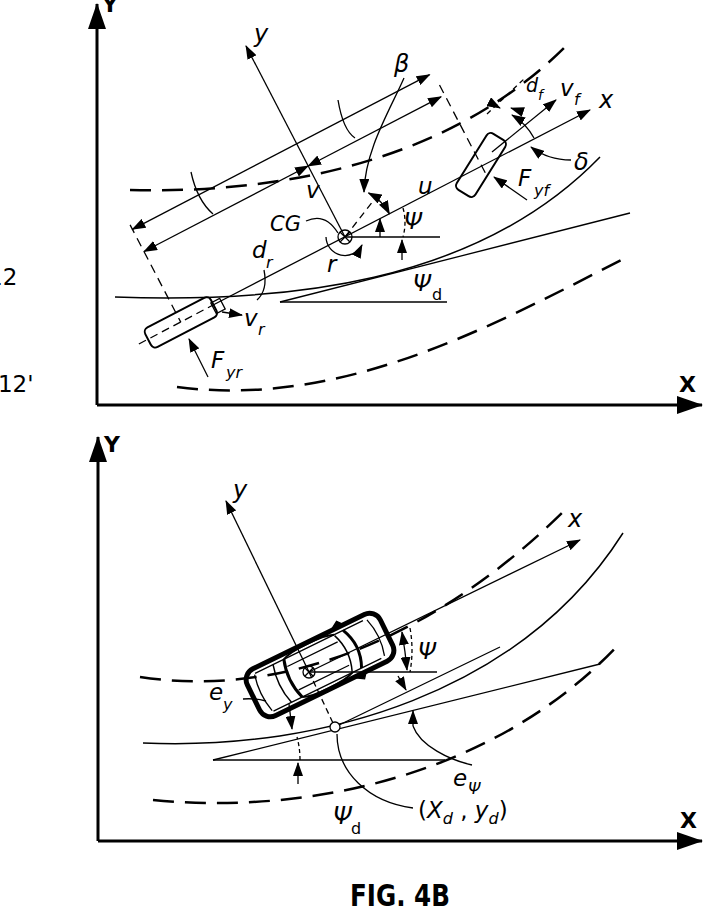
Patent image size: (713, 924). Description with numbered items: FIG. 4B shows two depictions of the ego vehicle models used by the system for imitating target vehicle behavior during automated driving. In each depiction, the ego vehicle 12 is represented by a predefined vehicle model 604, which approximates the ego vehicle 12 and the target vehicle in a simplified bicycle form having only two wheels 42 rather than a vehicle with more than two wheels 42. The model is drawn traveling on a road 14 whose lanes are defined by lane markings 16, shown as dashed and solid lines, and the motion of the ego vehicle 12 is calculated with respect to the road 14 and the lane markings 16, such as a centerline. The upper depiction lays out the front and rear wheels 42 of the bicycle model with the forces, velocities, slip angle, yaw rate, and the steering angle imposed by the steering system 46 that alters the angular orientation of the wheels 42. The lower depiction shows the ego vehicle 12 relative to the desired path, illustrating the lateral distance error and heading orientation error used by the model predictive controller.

The ego vehicle 12 is at (351, 612).
The road 14 is at (538, 306).
The lane markings 16 is at (574, 46).
The wheels 42 is at (162, 318).
The steering system 46 is at (16, 310).
The predefined vehicle model 604 is at (252, 164).